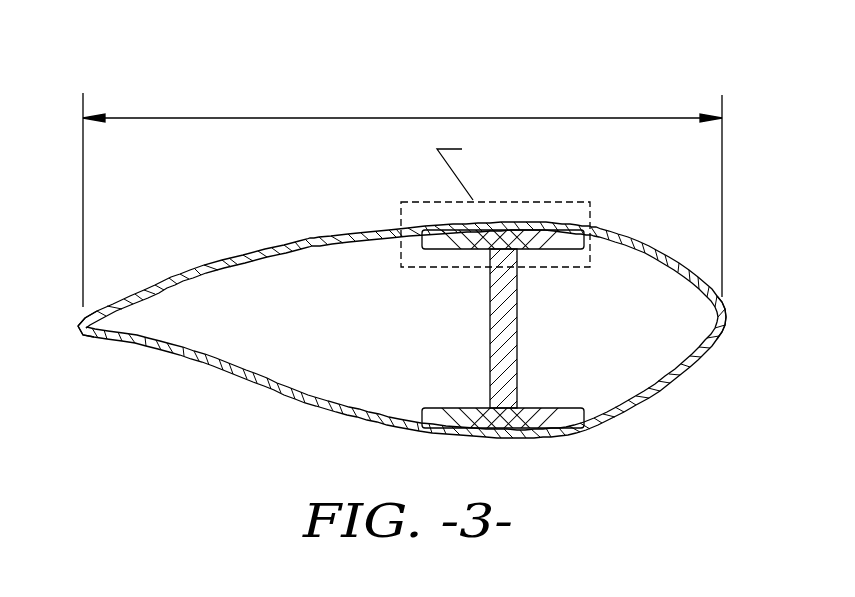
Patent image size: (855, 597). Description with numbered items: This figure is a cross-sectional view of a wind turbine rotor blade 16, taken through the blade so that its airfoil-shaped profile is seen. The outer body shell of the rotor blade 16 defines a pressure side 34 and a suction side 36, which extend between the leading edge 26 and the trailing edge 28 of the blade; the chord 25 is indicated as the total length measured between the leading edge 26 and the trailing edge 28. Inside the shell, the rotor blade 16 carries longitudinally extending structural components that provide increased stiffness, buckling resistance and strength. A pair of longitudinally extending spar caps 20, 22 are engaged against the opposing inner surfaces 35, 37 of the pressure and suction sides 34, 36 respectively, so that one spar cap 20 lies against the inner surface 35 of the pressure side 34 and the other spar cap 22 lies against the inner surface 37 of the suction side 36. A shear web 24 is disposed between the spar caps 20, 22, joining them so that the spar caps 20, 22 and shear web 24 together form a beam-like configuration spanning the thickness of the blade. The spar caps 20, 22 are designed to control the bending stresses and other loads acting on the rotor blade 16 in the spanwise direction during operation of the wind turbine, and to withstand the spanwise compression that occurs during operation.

The rotor blade 16 is at (643, 83).
The spar cap 20 is at (541, 236).
The spar cap 22 is at (543, 420).
The shear web 24 is at (518, 370).
The chord 25 is at (293, 118).
The leading edge 26 is at (723, 317).
The trailing edge 28 is at (82, 328).
The pressure side 34 is at (313, 402).
The inner surface 35 is at (235, 360).
The suction side 36 is at (323, 238).
The inner surface 37 is at (292, 258).